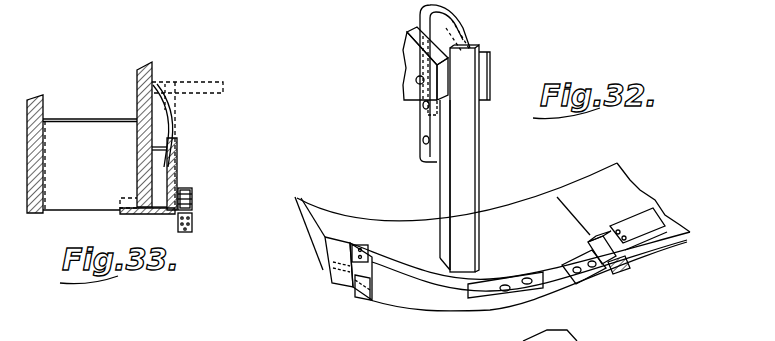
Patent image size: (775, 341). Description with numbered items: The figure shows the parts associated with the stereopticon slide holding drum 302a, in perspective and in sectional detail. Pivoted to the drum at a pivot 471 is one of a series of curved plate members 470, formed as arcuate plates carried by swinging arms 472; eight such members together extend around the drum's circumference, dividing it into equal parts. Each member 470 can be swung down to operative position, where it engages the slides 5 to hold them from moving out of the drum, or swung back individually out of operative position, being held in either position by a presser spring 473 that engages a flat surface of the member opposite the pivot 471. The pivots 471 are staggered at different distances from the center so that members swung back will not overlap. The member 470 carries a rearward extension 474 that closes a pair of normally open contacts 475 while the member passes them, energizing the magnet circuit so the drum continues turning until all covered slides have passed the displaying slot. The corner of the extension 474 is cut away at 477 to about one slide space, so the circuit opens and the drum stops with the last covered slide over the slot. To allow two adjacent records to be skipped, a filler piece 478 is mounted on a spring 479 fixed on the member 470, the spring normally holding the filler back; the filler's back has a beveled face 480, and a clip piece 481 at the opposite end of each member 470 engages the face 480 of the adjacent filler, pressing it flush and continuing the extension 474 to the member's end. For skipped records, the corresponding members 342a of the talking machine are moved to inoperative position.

In FIG. 33, the slides 5 is at (80, 197).
In FIG. 33, the slide holding drum 302a is at (137, 76).
In FIG. 32, the members of the talking machine 342a is at (575, 332).
In FIG. 32, the curved plate member 470 is at (388, 227).
In FIG. 33, the pivot 471 is at (172, 145).
In FIG. 32, the pivot 471 is at (417, 83).
In FIG. 32, the swinging arm 472 is at (466, 185).
In FIG. 33, the presser spring 473 is at (153, 125).
In FIG. 32, the presser spring 473 is at (460, 25).
In FIG. 33, the rearward extension 474 is at (192, 190).
In FIG. 32, the rearward extension 474 is at (537, 297).
In FIG. 33, the contacts 475 is at (193, 218).
In FIG. 32, the cut away portion 477 is at (368, 300).
In FIG. 32, the filler piece 478 is at (350, 242).
In FIG. 32, the spring 479 is at (433, 277).
In FIG. 32, the beveled face 480 is at (337, 255).
In FIG. 33, the clip piece 481 is at (204, 180).
In FIG. 32, the clip piece 481 is at (602, 258).